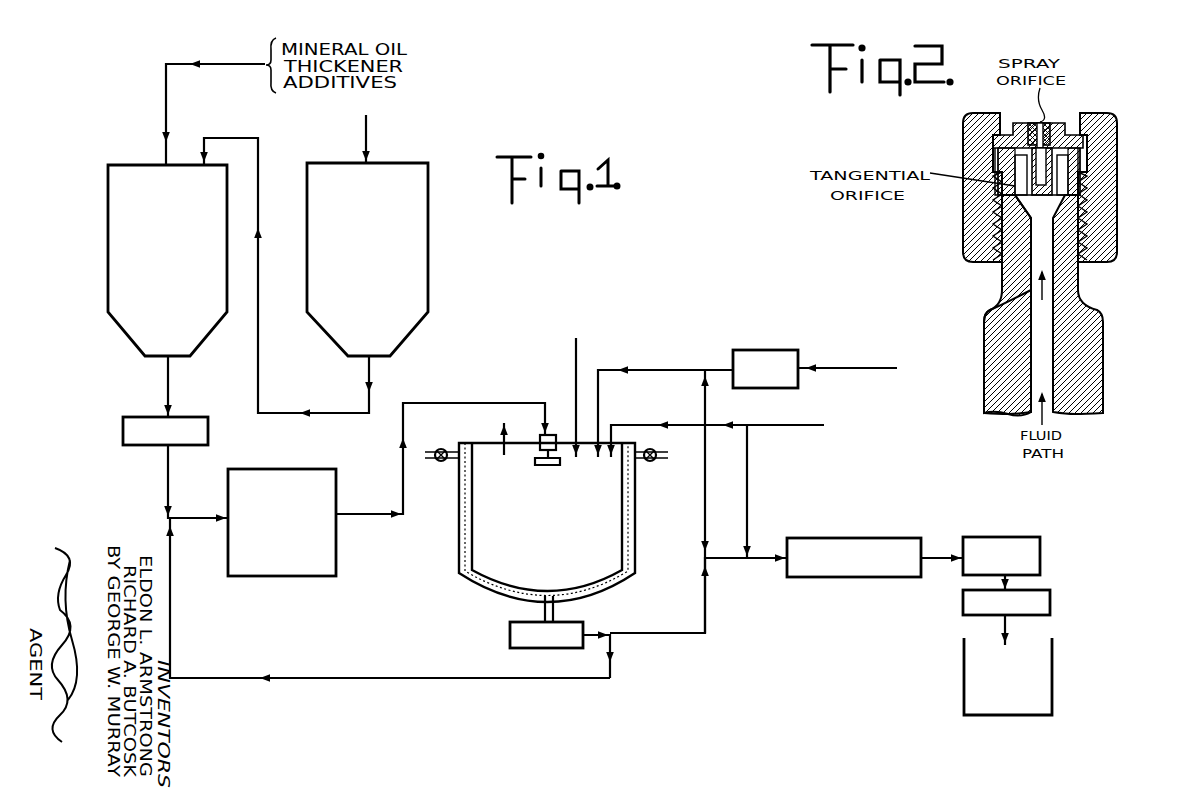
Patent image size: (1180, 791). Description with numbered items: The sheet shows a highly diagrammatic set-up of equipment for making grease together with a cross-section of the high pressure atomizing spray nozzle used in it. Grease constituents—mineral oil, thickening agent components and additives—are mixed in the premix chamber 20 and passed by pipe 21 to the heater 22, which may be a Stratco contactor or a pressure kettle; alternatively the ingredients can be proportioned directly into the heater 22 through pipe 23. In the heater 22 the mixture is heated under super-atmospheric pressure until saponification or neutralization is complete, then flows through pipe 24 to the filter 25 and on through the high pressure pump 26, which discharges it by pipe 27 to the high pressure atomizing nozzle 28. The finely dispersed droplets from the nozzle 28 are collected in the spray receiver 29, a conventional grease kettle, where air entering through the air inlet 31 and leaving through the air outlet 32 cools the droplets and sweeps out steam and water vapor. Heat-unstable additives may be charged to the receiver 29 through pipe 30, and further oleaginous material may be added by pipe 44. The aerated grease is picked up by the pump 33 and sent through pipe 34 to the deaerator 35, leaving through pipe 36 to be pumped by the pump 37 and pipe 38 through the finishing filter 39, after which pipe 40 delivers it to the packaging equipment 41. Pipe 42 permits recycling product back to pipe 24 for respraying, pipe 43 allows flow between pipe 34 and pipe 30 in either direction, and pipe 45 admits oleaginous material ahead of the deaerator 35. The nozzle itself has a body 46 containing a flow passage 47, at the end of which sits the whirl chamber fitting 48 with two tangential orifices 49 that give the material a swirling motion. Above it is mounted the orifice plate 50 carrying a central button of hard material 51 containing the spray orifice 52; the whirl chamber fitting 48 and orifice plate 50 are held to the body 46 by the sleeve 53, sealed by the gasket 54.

In FIG. 1, the premix chamber 20 is at (428, 235).
In FIG. 1, the pipe 21 is at (330, 411).
In FIG. 1, the heater 22 is at (108, 216).
In FIG. 1, the pipe 23 is at (166, 100).
In FIG. 1, the pipe 24 is at (168, 374).
In FIG. 1, the filter 25 is at (123, 430).
In FIG. 1, the high pressure pump 26 is at (283, 577).
In FIG. 1, the pipe 27 is at (452, 380).
In FIG. 1, the high pressure atomizing nozzle 28 is at (540, 466).
In FIG. 2, the high pressure atomizing nozzle 28 is at (1105, 119).
In FIG. 1, the spray receiver 29 is at (460, 535).
In FIG. 1, the pipe 30 is at (660, 370).
In FIG. 1, the air inlet 31 is at (576, 368).
In FIG. 1, the air outlet 32 is at (498, 430).
In FIG. 1, the pump 33 is at (510, 636).
In FIG. 1, the pipe 34 is at (600, 631).
In FIG. 1, the deaerator 35 is at (815, 578).
In FIG. 1, the pipe 36 is at (940, 556).
In FIG. 1, the pump 37 is at (1000, 537).
In FIG. 1, the pipe 38 is at (1008, 580).
In FIG. 1, the finishing filter 39 is at (1052, 602).
In FIG. 1, the pipe 40 is at (1000, 625).
In FIG. 1, the packaging equipment 41 is at (1053, 668).
In FIG. 1, the pipe 42 is at (172, 594).
In FIG. 1, the pipe 43 is at (705, 520).
In FIG. 1, the pipe 44 is at (640, 425).
In FIG. 1, the pipe 45 is at (747, 500).
In FIG. 2, the body 46 is at (984, 322).
In FIG. 2, the flow passage 47 is at (1042, 421).
In FIG. 2, the whirl chamber fitting 48 is at (1020, 197).
In FIG. 2, the orifices 49 is at (1060, 186).
In FIG. 2, the orifice plate 50 is at (993, 141).
In FIG. 2, the central button of hard material 51 is at (1045, 122).
In FIG. 2, the spray orifice 52 is at (1034, 121).
In FIG. 2, the sleeve 53 is at (1105, 238).
In FIG. 2, the gasket 54 is at (1082, 166).